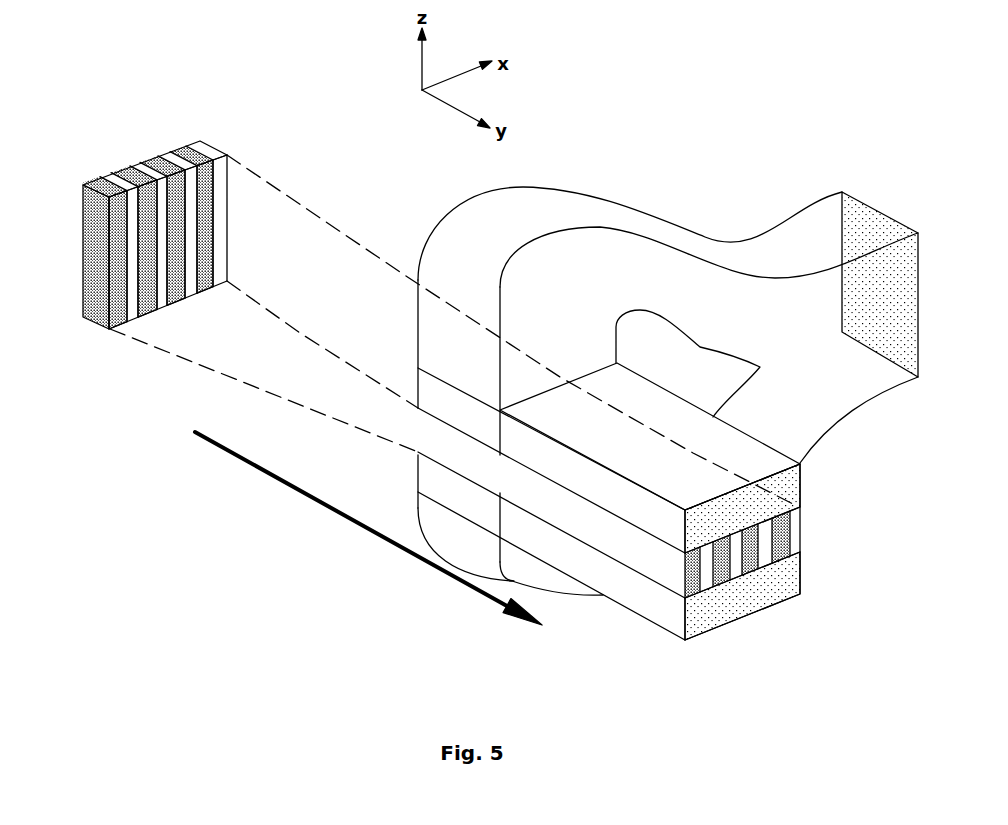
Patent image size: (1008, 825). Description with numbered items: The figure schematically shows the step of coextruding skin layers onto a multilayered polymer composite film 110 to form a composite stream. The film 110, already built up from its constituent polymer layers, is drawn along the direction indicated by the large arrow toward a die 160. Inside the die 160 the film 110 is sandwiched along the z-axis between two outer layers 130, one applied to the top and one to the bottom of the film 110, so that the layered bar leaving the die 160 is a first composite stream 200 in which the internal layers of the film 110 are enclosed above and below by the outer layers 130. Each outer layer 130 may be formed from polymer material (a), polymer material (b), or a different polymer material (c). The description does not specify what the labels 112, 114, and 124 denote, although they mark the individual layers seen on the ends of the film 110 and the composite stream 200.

The multilayered polymer composite film 110 is at (80, 253).
The first layer 112 is at (83, 185).
The second layer 114 is at (142, 165).
The intermediate layer 124 is at (120, 171).
The outer layer 130 is at (872, 225).
The die 160 is at (680, 201).
The first composite stream 200 is at (754, 629).